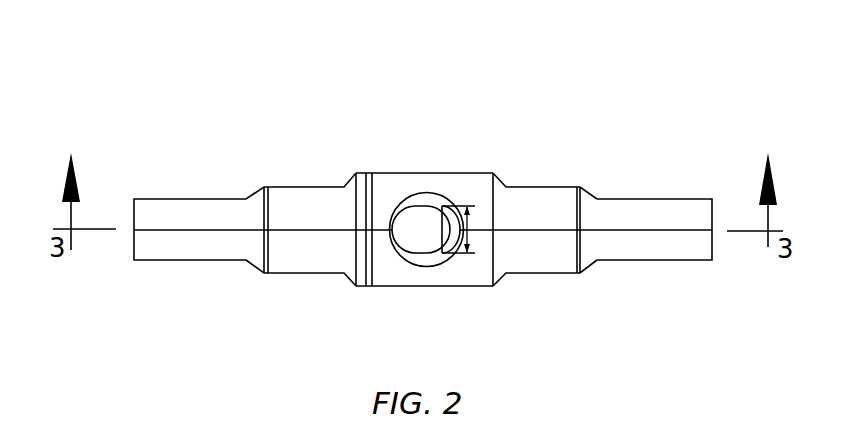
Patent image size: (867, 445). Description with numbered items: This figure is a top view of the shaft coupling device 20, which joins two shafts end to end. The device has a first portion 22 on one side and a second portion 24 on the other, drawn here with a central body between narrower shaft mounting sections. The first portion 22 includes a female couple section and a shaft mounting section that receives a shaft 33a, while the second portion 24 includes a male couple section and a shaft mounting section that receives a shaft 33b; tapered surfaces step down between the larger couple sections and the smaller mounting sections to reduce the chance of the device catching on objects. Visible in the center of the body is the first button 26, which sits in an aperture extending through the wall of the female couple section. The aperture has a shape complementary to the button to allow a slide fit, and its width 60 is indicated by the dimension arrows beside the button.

The shaft coupling device 20 is at (423, 177).
The first portion 22 is at (524, 174).
The second portion 24 is at (334, 156).
The first button 26 is at (435, 238).
The shaft 33a is at (653, 198).
The shaft 33b is at (188, 260).
The width 60 is at (463, 230).